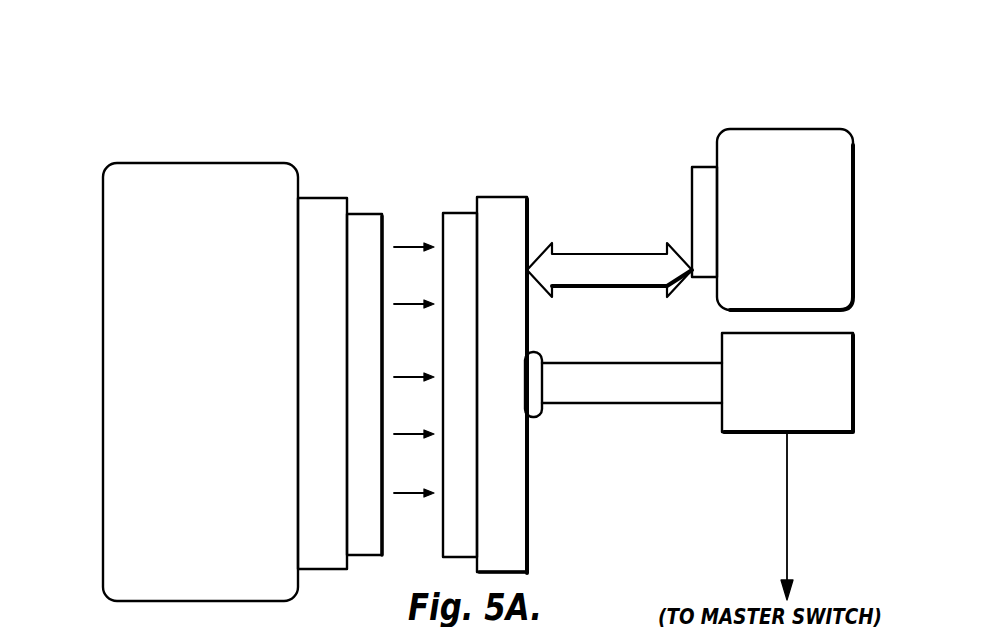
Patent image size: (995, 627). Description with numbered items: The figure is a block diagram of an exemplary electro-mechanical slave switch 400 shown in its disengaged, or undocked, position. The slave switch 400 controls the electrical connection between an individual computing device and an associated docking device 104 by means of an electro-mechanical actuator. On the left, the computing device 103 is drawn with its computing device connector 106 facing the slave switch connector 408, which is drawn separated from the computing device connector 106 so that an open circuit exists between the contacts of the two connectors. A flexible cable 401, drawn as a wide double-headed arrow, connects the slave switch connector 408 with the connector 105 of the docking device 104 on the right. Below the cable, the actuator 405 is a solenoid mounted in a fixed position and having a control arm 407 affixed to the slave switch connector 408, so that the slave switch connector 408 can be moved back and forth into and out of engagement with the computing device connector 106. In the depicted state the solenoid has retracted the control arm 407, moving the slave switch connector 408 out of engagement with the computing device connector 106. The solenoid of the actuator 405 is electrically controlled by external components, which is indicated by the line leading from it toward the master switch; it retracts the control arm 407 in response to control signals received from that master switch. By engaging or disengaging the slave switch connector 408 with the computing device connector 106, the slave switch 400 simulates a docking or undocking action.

The electro-mechanical slave switch 400 is at (575, 116).
The internal combustion engine 103 is at (103, 190).
The computing device connector 106 is at (342, 198).
The slave switch connector 408 is at (508, 197).
The flexible cable 401 is at (600, 252).
The connector 105 is at (702, 167).
The docking device 104 is at (825, 129).
The actuator 405 is at (722, 340).
The control arm 407 is at (627, 405).